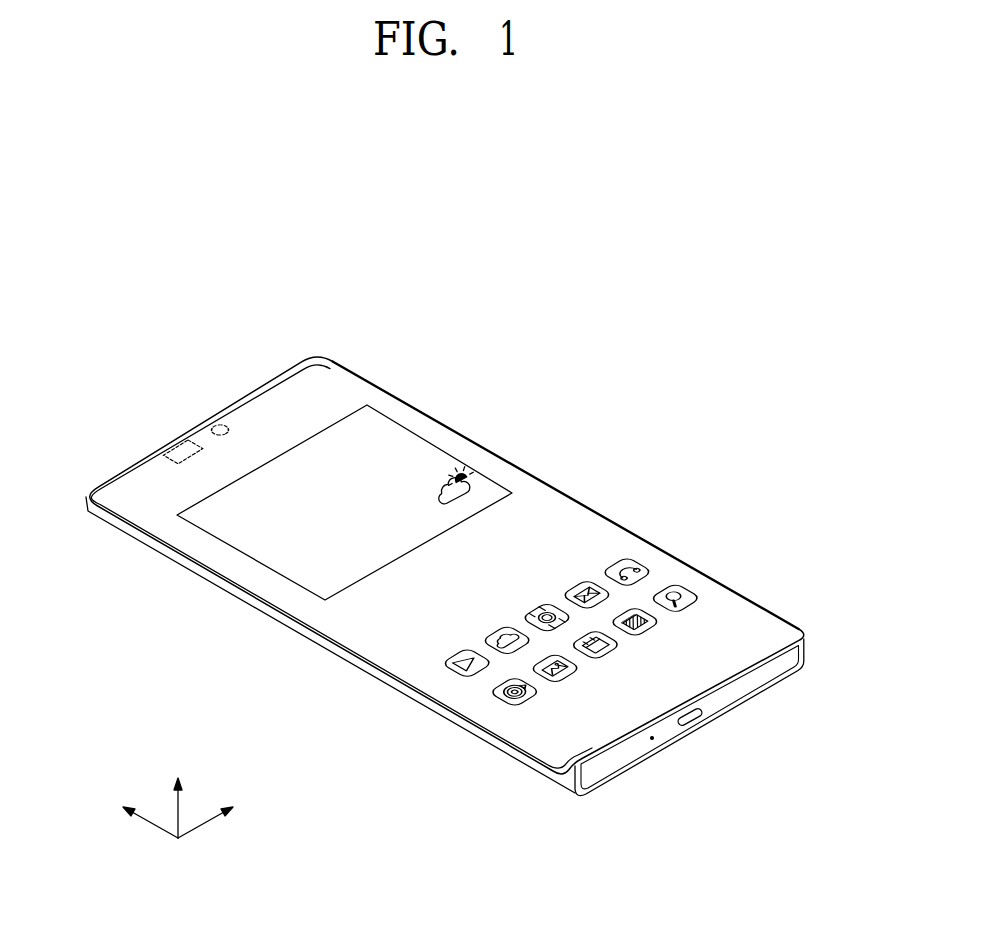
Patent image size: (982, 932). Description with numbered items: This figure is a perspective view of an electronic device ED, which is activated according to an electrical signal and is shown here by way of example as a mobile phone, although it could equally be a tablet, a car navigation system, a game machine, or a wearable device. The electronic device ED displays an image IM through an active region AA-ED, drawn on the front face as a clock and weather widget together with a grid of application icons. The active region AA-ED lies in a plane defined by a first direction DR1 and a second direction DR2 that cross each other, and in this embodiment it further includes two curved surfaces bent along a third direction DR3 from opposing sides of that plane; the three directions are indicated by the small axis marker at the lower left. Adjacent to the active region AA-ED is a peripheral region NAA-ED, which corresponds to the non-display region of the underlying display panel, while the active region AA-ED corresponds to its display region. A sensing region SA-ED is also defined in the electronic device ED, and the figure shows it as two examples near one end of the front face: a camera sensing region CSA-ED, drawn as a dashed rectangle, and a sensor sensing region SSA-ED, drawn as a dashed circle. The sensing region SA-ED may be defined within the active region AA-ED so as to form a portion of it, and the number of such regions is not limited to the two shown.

The electronic device ED is at (682, 387).
The active region AA-ED is at (567, 537).
The peripheral region NAA-ED is at (293, 369).
The sensing region SA-ED is at (207, 296).
The camera sensing region CSA-ED is at (178, 445).
The sensor sensing region SSA-ED is at (221, 425).
The image IM is at (643, 567).
The first direction DR1 is at (225, 816).
The second direction DR2 is at (131, 816).
The third direction DR3 is at (178, 795).